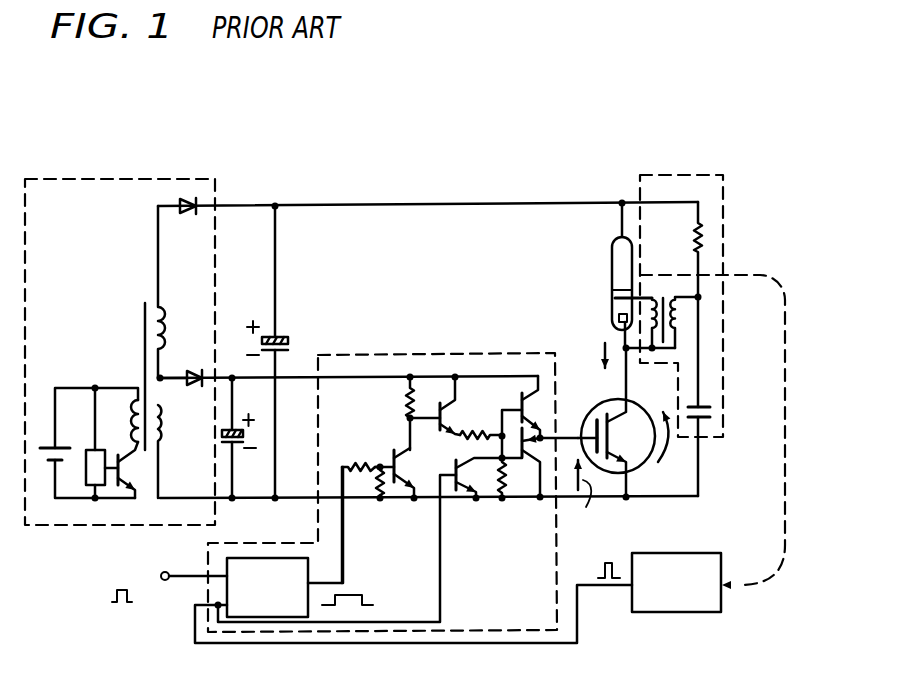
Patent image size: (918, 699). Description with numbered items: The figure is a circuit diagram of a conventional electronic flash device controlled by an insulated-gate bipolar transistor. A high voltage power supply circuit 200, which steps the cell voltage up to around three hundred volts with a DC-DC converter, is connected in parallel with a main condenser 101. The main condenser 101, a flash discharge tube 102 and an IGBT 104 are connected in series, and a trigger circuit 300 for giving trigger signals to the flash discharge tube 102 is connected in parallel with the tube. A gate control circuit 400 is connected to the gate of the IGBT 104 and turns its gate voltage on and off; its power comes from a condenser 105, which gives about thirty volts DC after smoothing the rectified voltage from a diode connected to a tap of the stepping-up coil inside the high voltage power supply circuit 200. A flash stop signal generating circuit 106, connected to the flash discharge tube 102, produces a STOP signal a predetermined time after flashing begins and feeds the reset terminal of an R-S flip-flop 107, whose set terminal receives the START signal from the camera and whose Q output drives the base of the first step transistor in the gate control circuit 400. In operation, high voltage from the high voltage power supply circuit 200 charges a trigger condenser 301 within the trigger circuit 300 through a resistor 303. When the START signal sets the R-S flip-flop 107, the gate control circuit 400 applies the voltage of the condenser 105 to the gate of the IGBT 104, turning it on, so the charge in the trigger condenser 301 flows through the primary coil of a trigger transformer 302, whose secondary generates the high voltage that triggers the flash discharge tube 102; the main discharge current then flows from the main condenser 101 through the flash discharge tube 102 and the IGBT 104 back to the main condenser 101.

The main condenser 101 is at (283, 333).
The flash discharge tube 102 is at (612, 265).
The IGBT 104 is at (644, 409).
The condenser 105 is at (250, 432).
The flash stop signal generating circuit 106 is at (700, 612).
The R-S flip-flop 107 is at (310, 578).
The high voltage power supply circuit 200 is at (197, 152).
The trigger circuit 300 is at (707, 357).
The trigger condenser 301 is at (712, 413).
The trigger transformer 302 is at (677, 312).
The resistor 303 is at (702, 231).
The gate control circuit 400 is at (357, 475).